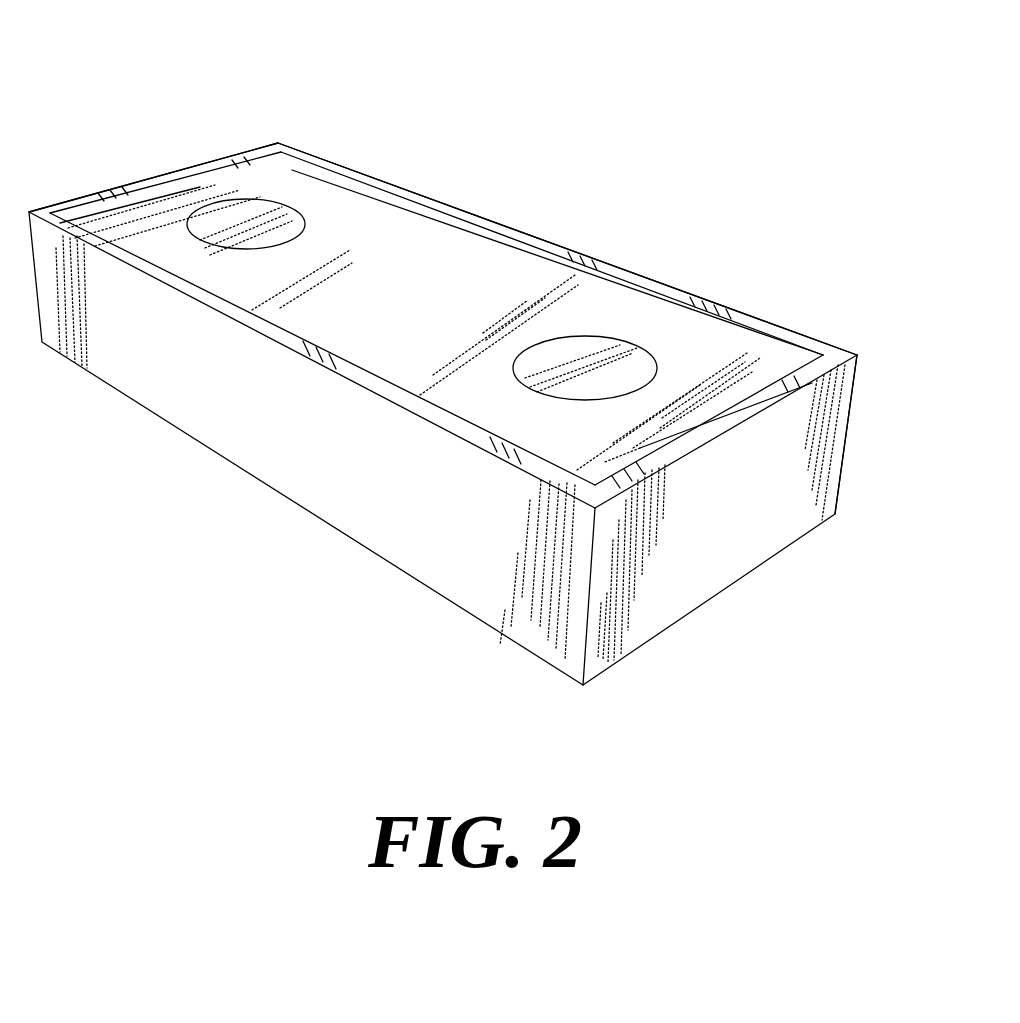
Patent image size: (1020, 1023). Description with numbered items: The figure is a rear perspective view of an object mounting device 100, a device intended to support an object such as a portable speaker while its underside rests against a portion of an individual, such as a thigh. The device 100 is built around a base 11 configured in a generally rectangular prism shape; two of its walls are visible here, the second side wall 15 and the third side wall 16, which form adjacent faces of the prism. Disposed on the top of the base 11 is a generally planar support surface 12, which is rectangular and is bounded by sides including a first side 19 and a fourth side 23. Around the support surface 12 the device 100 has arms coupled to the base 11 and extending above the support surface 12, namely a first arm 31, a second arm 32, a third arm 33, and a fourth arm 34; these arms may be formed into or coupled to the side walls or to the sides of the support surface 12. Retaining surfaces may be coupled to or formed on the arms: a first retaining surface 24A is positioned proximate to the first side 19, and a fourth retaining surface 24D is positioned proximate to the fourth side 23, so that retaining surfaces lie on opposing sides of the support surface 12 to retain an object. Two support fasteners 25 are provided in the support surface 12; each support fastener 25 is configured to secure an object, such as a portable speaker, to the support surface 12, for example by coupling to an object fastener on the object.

The object mounting device 100 is at (522, 72).
The base 11 is at (858, 354).
The support surface 12 is at (464, 242).
The second side wall 15 is at (703, 517).
The third side wall 16 is at (310, 432).
The first side 19 is at (615, 293).
The fourth side 23 is at (170, 193).
The first retaining surface 24A is at (380, 210).
The fourth retaining surface 24D is at (248, 172).
The support fastener 25 is at (272, 233).
The first arm 31 is at (555, 247).
The second arm 32 is at (728, 423).
The third arm 33 is at (355, 368).
The fourth arm 34 is at (83, 197).